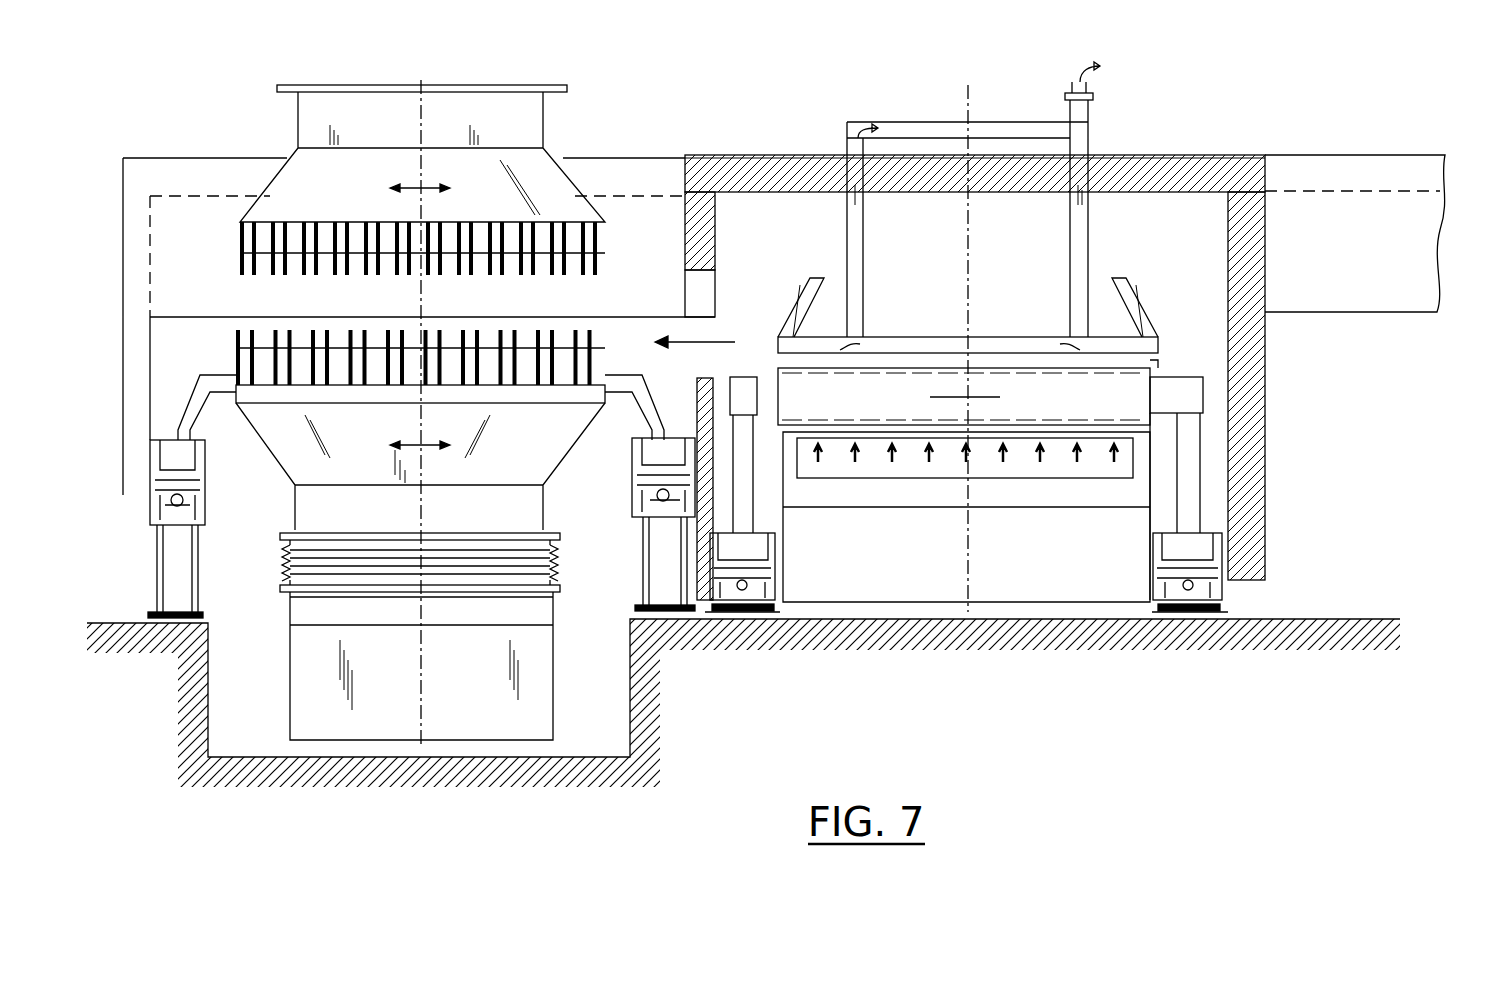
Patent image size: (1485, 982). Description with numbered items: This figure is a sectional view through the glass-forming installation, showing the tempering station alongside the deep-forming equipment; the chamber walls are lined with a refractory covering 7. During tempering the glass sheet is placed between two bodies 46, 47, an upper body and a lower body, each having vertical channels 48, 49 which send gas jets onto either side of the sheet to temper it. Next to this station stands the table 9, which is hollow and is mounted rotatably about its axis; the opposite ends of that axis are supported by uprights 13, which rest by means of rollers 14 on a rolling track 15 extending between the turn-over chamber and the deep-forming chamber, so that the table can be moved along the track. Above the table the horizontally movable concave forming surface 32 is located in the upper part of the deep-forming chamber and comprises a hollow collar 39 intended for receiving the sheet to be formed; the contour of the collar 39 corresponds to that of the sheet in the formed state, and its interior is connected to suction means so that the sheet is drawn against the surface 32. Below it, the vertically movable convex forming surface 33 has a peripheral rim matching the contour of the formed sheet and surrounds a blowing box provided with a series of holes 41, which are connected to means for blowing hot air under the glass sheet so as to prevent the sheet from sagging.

The refractory covering 7 is at (1248, 258).
The table 9 is at (1158, 360).
The uprights 13 is at (1195, 452).
The rollers 14 is at (1205, 560).
The rolling track 15 is at (1183, 612).
The concave forming surface 32 is at (965, 340).
The convex forming surface 33 is at (1045, 430).
The hollow collar 39 is at (897, 345).
The holes 41 is at (880, 438).
The body 46 is at (545, 182).
The body 47 is at (545, 430).
The vertical channels 48 is at (275, 272).
The vertical channels 49 is at (457, 330).